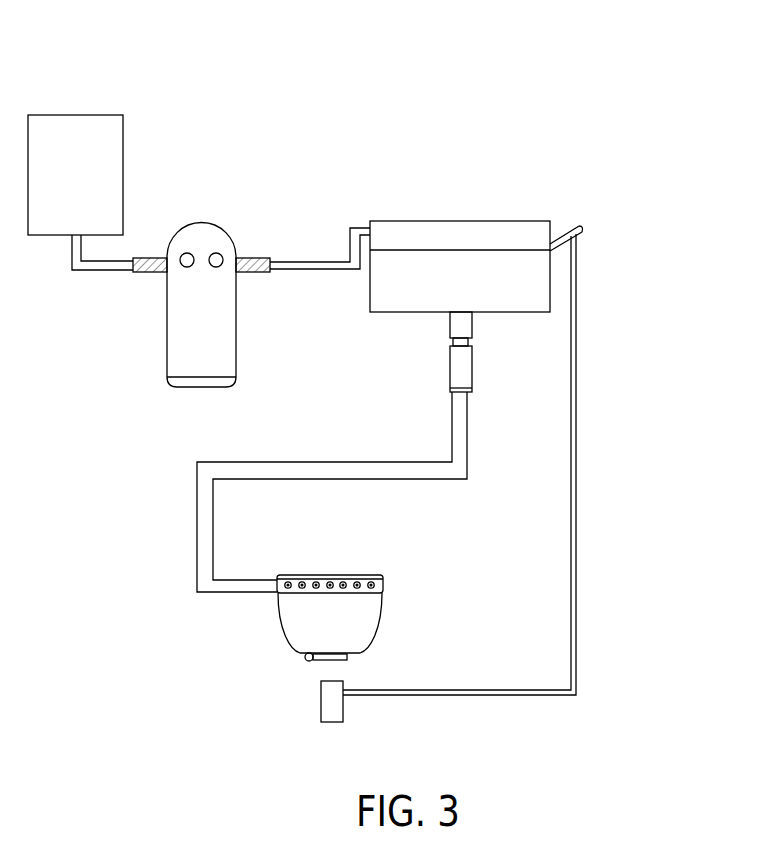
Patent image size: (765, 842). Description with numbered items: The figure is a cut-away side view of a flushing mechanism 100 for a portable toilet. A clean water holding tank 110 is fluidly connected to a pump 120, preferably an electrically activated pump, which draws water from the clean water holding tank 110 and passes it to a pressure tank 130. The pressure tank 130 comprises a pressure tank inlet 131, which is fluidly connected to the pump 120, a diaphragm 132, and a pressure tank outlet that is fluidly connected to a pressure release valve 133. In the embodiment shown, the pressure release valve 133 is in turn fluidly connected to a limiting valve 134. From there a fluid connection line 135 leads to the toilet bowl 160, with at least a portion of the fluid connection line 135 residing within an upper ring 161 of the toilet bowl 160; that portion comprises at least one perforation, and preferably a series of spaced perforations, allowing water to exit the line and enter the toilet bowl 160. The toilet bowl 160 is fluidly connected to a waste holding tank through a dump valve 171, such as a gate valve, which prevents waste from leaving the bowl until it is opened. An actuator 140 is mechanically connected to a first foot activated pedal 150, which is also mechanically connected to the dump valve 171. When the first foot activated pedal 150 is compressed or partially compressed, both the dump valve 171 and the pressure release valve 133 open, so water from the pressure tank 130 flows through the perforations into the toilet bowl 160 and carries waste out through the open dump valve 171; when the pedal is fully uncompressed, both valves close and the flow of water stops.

The flushing mechanism 100 is at (650, 96).
The clean water holding tank 110 is at (61, 187).
The pump 120 is at (167, 352).
The pressure tank 130 is at (460, 230).
The pressure tank inlet 131 is at (368, 238).
The diaphragm 132 is at (411, 248).
The pressure release valve 133 is at (472, 325).
The limiting valve 134 is at (472, 365).
The fluid connection line 135 is at (287, 465).
The actuator 140 is at (568, 228).
The first foot activated pedal 150 is at (332, 710).
The toilet bowl 160 is at (370, 588).
The upper ring 161 is at (385, 597).
The dump valve 171 is at (350, 657).